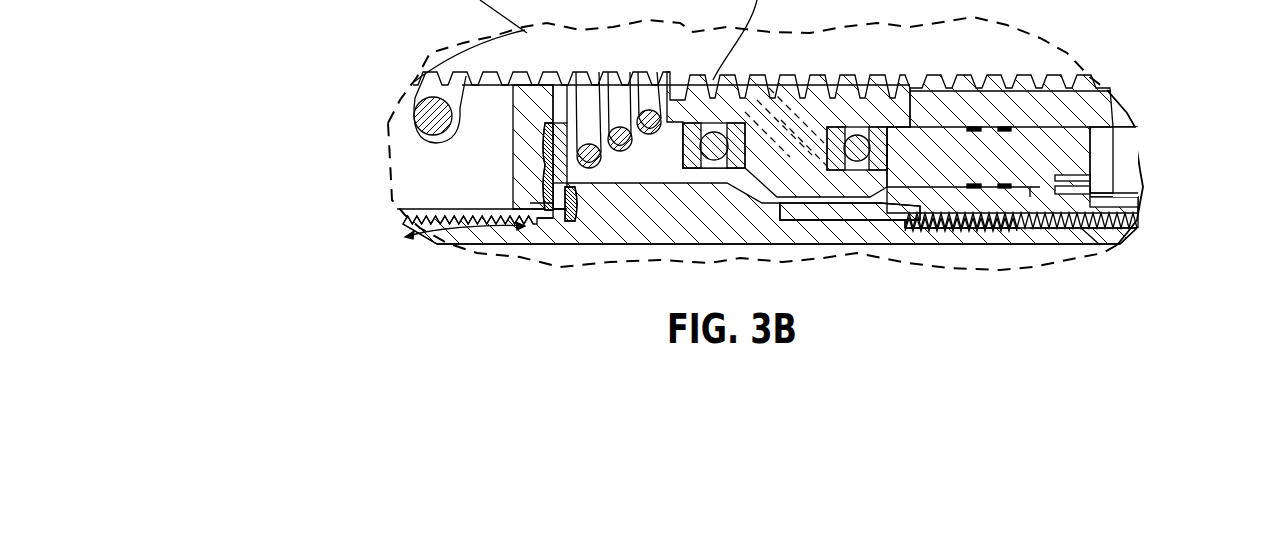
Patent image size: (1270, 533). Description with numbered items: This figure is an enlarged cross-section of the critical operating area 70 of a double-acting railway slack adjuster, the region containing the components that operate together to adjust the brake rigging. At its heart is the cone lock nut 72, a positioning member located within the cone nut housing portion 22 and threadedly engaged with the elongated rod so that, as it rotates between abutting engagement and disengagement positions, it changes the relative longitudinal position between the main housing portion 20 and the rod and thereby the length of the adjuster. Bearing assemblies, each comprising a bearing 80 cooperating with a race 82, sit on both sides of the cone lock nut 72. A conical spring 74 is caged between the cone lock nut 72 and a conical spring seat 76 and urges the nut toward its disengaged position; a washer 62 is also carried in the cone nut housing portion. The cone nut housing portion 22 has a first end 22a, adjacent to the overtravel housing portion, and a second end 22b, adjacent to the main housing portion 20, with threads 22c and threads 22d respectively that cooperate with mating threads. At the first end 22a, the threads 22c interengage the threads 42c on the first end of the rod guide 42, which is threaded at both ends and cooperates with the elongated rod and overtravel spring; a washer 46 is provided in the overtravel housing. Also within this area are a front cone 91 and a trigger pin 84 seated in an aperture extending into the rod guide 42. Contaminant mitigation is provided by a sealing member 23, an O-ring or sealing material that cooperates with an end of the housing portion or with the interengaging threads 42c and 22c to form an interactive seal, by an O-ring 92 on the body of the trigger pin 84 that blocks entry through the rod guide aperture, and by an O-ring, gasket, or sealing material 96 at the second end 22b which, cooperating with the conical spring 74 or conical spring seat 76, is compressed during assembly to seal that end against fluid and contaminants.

The critical operating area 70 is at (303, 87).
The main housing portion 20 is at (395, 209).
The washer 62 is at (527, 167).
The cone nut housing portion 22 is at (580, 213).
The first end 22a is at (983, 220).
The second end 22b is at (457, 238).
The threads 22c is at (968, 222).
The threads 22d is at (445, 229).
The O-ring, gasket, or sealing material 96 is at (512, 243).
The conical spring seat 76 is at (547, 200).
The sealing member 23 is at (540, 212).
The conical spring 74 is at (620, 150).
The cone lock nut 72 is at (790, 185).
The race 82 is at (690, 160).
The bearing 80 is at (711, 160).
The front cone 91 is at (860, 207).
The rod guide 42 is at (1025, 105).
The threads 42c is at (937, 222).
The O-ring 92 is at (1040, 177).
The washer 46 is at (1113, 160).
The trigger pin 84 is at (1103, 250).